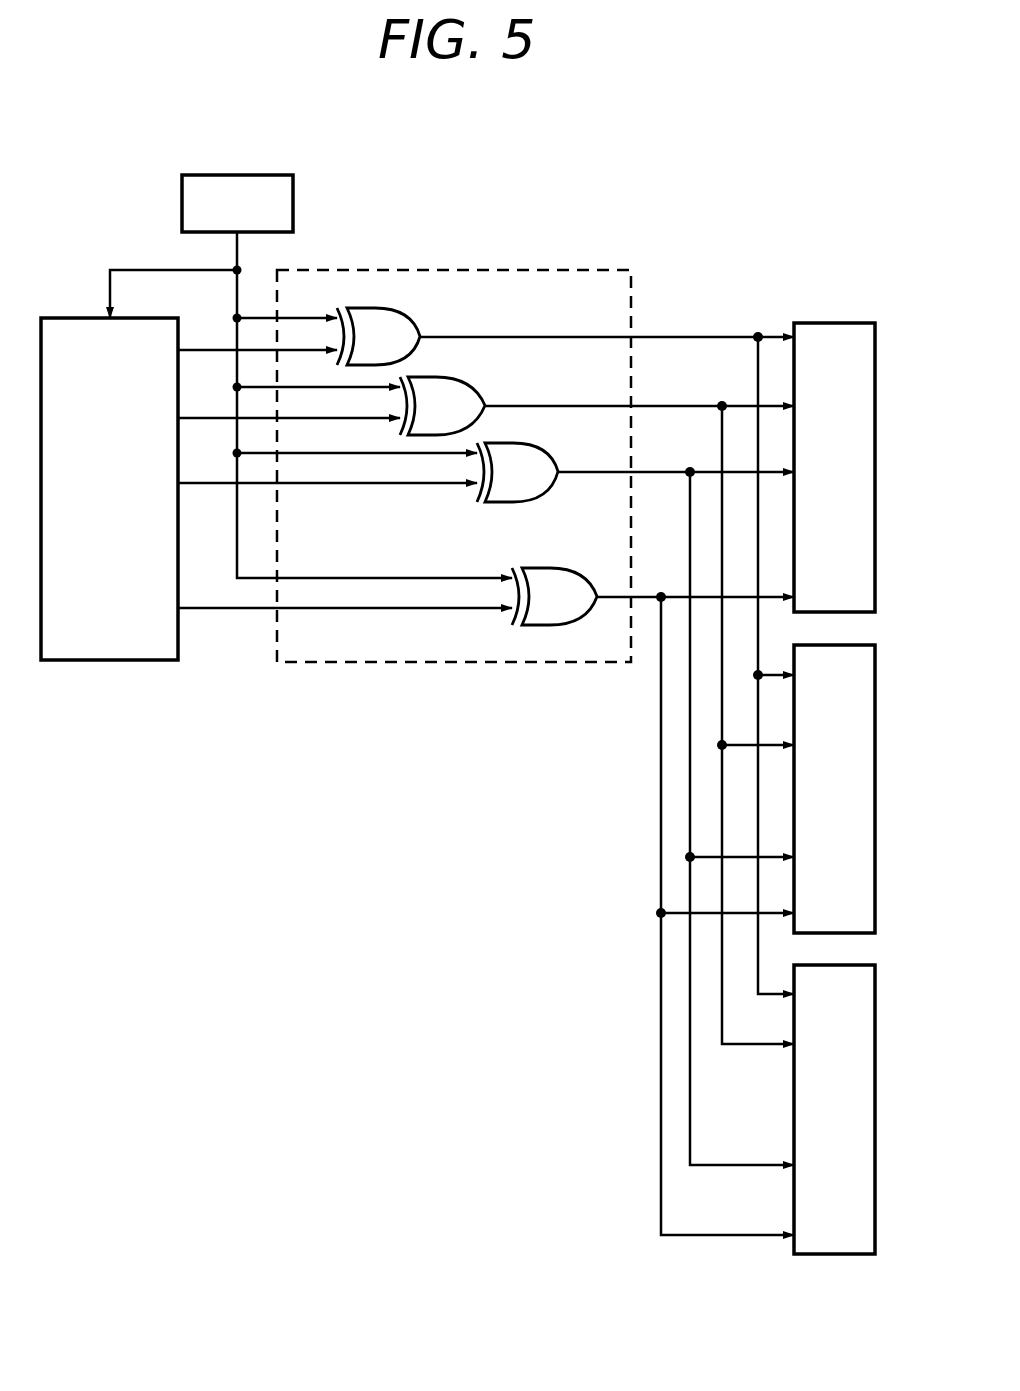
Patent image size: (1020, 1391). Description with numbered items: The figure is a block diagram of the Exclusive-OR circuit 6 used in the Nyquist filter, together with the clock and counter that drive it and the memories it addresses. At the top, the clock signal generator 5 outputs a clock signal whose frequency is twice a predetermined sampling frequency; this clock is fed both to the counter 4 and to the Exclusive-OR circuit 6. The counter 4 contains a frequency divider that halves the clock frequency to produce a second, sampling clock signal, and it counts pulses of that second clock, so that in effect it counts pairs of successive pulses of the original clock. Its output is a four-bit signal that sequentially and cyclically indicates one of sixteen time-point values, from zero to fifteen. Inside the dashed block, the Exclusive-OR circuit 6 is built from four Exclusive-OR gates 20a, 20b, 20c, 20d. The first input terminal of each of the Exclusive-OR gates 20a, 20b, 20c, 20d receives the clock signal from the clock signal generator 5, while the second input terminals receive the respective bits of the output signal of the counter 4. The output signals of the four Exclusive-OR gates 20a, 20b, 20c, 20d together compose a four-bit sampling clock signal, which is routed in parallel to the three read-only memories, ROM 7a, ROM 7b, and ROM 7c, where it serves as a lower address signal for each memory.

The counter 4 is at (142, 318).
The clock signal generator 5 is at (252, 178).
The Exclusive-OR circuit 6 is at (584, 270).
The Exclusive-OR gate 20a is at (400, 308).
The Exclusive-OR gate 20b is at (473, 376).
The Exclusive-OR gate 20c is at (548, 443).
The Exclusive-OR gate 20d is at (556, 567).
The ROM 7a is at (877, 370).
The ROM 7b is at (877, 705).
The ROM 7c is at (877, 1020).